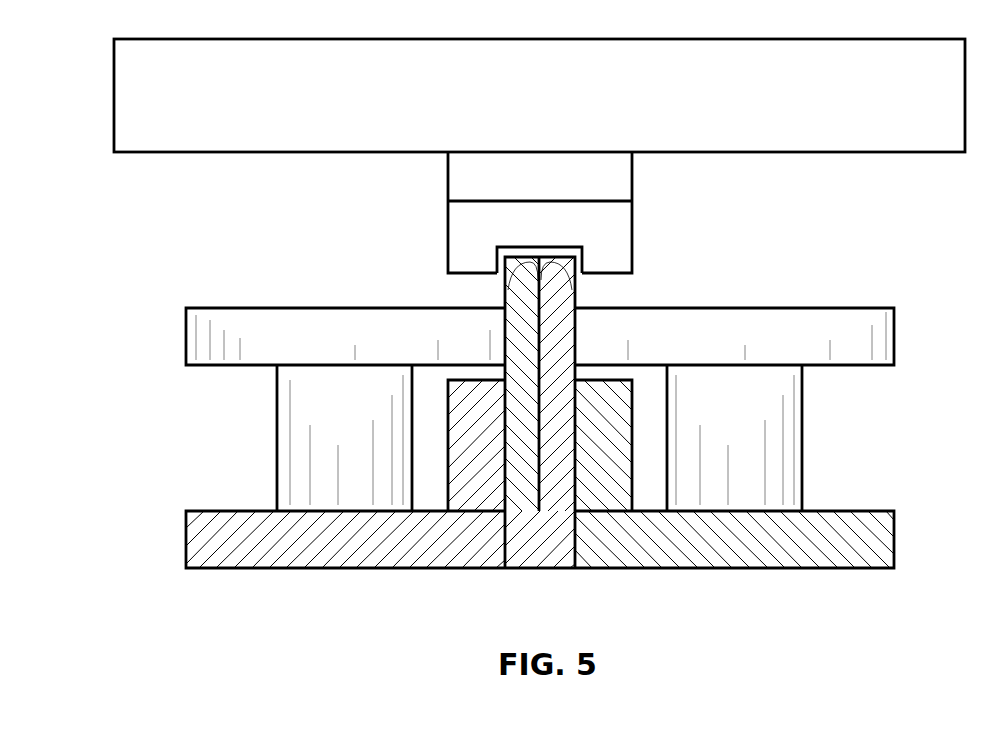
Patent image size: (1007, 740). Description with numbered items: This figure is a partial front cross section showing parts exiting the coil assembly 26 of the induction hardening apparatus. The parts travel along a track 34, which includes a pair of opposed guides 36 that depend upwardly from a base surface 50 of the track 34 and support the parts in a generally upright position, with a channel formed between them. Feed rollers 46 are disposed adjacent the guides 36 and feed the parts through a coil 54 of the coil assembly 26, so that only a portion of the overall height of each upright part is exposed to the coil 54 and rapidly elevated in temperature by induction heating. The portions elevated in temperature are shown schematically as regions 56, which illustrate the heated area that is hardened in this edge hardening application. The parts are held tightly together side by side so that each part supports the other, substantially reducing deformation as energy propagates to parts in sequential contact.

The coil assembly 26 is at (124, 92).
The coil 54 is at (460, 232).
The regions 56 is at (512, 268).
The feed rollers 46 is at (186, 338).
The guides 36 is at (448, 418).
The base surface 50 is at (866, 511).
The track 34 is at (540, 484).